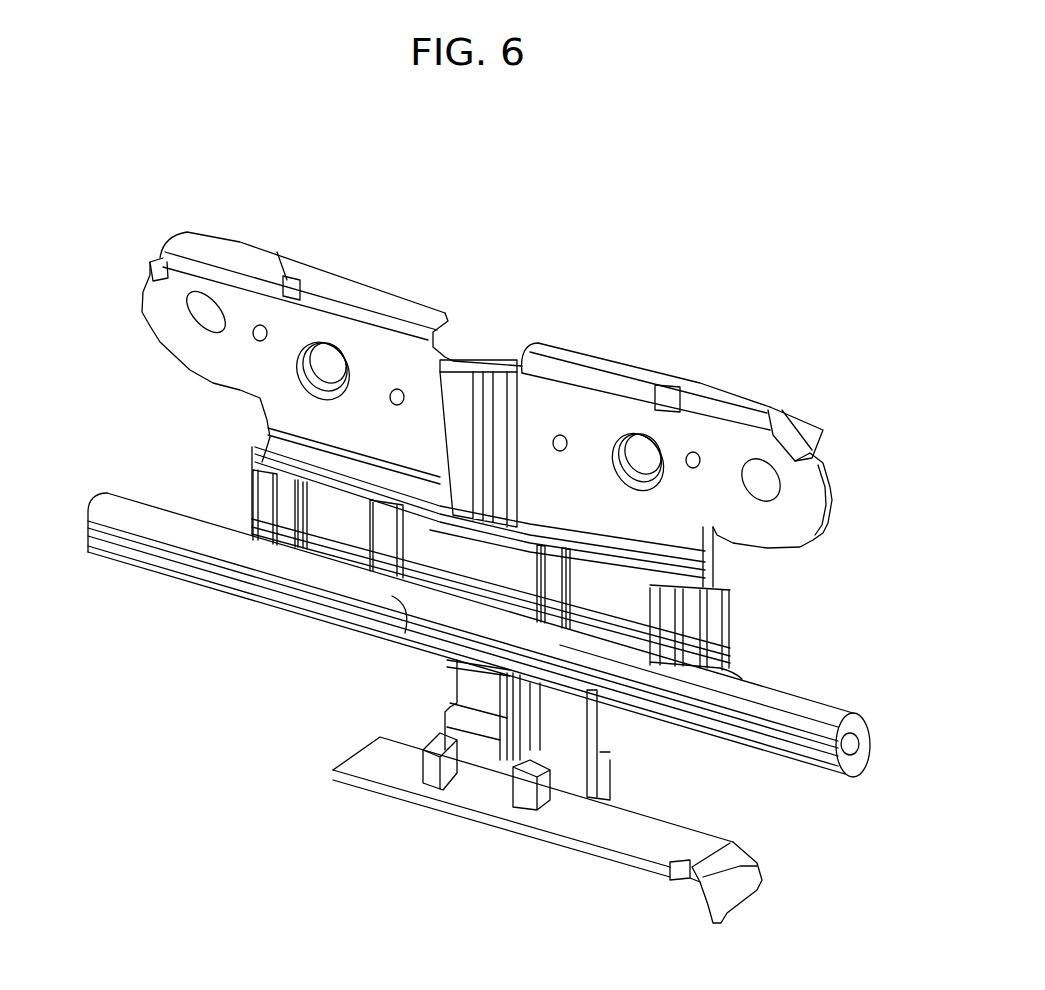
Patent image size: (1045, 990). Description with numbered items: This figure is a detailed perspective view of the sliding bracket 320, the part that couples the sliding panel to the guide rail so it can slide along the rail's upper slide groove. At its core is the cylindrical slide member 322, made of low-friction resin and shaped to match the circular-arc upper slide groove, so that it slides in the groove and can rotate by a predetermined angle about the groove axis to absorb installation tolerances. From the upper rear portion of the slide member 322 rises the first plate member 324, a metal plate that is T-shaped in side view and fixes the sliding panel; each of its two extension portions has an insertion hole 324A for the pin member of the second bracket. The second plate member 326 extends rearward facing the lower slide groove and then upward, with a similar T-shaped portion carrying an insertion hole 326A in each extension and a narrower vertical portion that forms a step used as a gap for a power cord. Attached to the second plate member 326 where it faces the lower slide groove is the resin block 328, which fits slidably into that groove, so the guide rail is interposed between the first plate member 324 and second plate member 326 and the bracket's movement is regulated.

The sliding bracket 320 is at (433, 307).
The slide member 322 is at (127, 497).
The first plate member 324 is at (163, 263).
The insertion hole 324A is at (323, 387).
The second plate member 326 is at (453, 697).
The insertion hole 326A is at (313, 387).
The block 328 is at (510, 807).